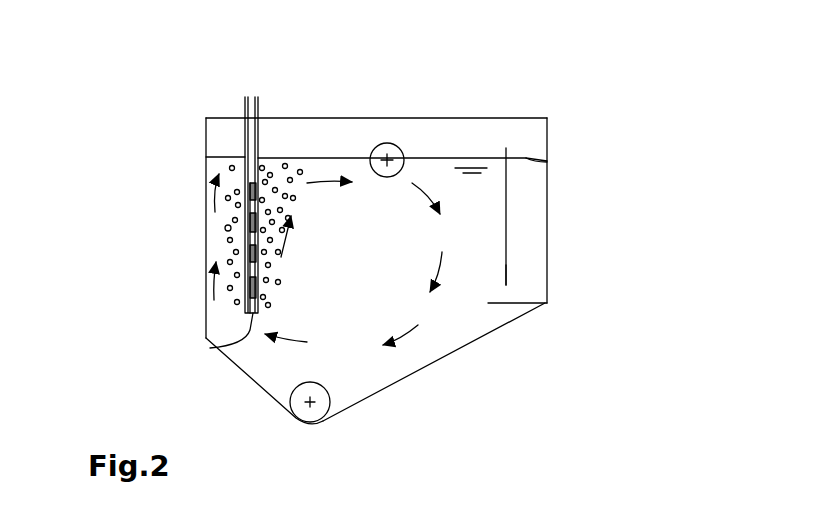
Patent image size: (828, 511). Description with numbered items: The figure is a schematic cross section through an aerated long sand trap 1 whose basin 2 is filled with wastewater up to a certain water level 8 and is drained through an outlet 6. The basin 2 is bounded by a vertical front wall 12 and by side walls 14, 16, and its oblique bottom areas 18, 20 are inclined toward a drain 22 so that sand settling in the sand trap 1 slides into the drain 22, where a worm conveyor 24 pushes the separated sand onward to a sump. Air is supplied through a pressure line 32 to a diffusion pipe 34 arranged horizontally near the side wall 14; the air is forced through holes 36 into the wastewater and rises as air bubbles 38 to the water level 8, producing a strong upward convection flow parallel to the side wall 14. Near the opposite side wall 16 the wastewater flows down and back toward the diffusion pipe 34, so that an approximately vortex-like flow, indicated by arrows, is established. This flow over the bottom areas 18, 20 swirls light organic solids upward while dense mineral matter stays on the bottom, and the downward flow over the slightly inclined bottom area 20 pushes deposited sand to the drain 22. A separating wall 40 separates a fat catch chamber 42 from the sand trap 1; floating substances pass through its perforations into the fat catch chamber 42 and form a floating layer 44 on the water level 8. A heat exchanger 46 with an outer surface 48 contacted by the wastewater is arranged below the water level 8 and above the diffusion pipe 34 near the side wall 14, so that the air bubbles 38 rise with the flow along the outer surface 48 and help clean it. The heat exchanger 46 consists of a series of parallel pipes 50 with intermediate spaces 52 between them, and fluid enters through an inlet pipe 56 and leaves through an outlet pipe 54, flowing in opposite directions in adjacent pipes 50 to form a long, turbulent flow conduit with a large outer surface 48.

The sand trap 1 is at (387, 249).
The basin 2 is at (547, 165).
The outlet 6 is at (388, 143).
The water level 8 is at (455, 158).
The front wall 12 is at (545, 312).
The side wall 14 is at (205, 234).
The side wall 16 is at (547, 225).
The bottom area 18 is at (242, 372).
The bottom area 20 is at (484, 342).
The drain 22 is at (312, 423).
The worm conveyor 24 is at (322, 404).
The pressure line 32 is at (234, 302).
The diffusion pipe 34 is at (252, 303).
The holes 36 is at (210, 348).
The air bubbles 38 is at (226, 230).
The separating wall 40 is at (506, 272).
The fat catch chamber 42 is at (530, 197).
The floating layer 44 is at (527, 160).
The heat exchanger 46 is at (232, 220).
The outer surface 48 is at (235, 192).
The pipes 50 is at (284, 240).
The intermediate spaces 52 is at (257, 263).
The outlet pipe 54 is at (257, 285).
The inlet pipe 56 is at (245, 133).